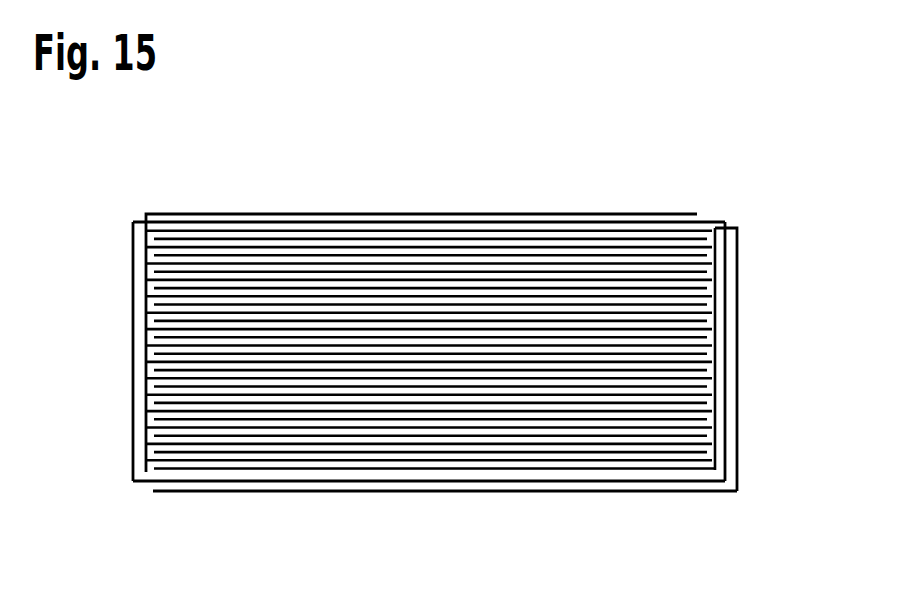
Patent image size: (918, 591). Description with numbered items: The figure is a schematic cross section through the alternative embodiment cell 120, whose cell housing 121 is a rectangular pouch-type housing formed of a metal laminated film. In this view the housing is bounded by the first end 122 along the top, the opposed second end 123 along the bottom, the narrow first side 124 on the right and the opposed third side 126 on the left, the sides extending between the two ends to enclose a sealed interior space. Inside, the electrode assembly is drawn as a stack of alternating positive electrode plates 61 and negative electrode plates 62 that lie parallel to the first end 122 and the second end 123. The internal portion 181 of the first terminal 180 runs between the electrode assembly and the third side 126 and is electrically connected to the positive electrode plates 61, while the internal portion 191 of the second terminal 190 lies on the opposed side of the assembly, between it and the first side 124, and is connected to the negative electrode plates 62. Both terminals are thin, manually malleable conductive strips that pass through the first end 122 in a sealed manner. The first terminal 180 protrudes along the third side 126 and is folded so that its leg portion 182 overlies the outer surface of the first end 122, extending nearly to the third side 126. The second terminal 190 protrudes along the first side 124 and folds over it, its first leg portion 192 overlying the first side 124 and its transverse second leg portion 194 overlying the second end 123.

The cell 120 is at (128, 182).
The cell housing 121 is at (435, 352).
The first end 122 is at (625, 222).
The second end 123 is at (613, 484).
The first side 124 is at (728, 457).
The third side 126 is at (133, 458).
The first terminal 180 is at (421, 304).
The leg portion 182 is at (368, 213).
The second terminal 190 is at (445, 530).
The second leg portion 194 is at (370, 492).
The internal portion 181 is at (367, 346).
The internal portion 191 is at (503, 349).
The first leg portion 192 is at (740, 396).
The positive electrode plates 61 is at (712, 277).
The negative electrode plates 62 is at (165, 268).